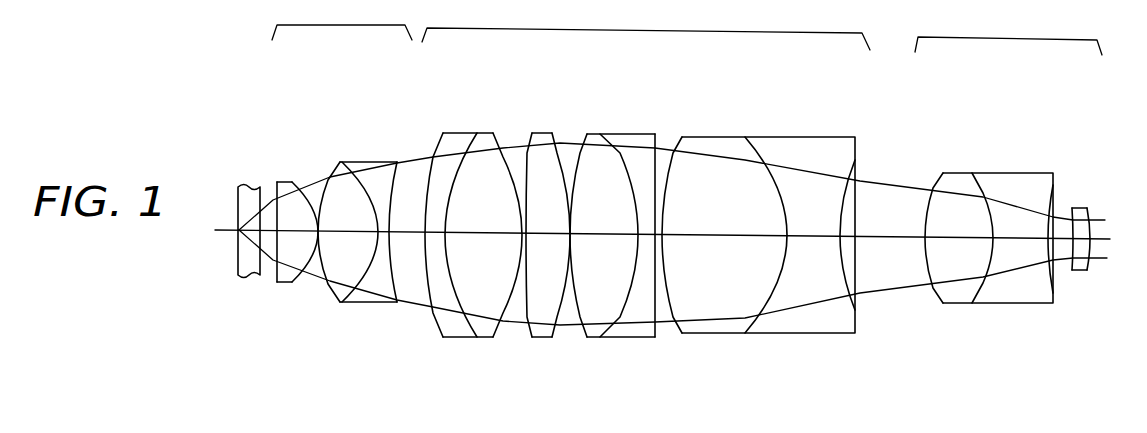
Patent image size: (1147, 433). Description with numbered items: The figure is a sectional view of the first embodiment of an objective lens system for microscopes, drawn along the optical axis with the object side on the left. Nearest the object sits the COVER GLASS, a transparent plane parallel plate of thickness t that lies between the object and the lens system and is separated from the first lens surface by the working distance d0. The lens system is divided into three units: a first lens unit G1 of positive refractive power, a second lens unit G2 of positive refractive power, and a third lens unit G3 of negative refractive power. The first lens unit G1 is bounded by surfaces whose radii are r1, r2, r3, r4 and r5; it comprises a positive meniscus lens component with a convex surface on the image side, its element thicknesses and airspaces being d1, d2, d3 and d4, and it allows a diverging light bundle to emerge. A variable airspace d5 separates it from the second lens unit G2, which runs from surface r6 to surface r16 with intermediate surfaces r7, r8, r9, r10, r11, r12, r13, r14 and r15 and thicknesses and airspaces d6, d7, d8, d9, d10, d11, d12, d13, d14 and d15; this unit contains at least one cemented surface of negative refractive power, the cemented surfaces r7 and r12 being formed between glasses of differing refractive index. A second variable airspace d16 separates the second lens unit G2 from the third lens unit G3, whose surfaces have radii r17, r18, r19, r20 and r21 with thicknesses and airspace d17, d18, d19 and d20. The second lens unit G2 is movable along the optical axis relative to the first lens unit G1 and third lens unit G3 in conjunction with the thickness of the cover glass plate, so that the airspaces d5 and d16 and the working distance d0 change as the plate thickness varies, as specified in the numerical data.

The first lens unit G1 is at (335, 196).
The second lens unit G2 is at (642, 213).
The third lens unit G3 is at (997, 211).
The cover glass plate COVER GLASS is at (240, 260).
The radius of curvature of first surface r1 is at (264, 182).
The radius of curvature of second surface r2 is at (306, 190).
The radius of curvature of third surface r3 is at (322, 220).
The radius of curvature of fourth surface r4 is at (361, 172).
The radius of curvature of fifth surface r5 is at (390, 180).
The radius of curvature of sixth surface r6 is at (429, 160).
The radius of curvature of seventh surface r7 is at (458, 163).
The radius of curvature of eighth surface r8 is at (504, 155).
The radius of curvature of ninth surface r9 is at (527, 150).
The radius of curvature of tenth surface r10 is at (557, 150).
The radius of curvature of eleventh surface r11 is at (580, 150).
The radius of curvature of twelfth surface r12 is at (621, 150).
The radius of curvature of thirteenth surface r13 is at (650, 134).
The radius of curvature of fourteenth surface r14 is at (674, 150).
The radius of curvature of fifteenth surface r15 is at (752, 137).
The radius of curvature of sixteenth surface r16 is at (835, 177).
The radius of curvature of seventeenth surface r17 is at (929, 185).
The radius of curvature of eighteenth surface r18 is at (983, 190).
The radius of curvature of nineteenth surface r19 is at (1040, 180).
The radius of curvature of twentieth surface r20 is at (1073, 210).
The radius of curvature of twenty-first surface r21 is at (1090, 212).
The working distance d0 is at (267, 231).
The thickness of first lens element d1 is at (290, 231).
The airspace between first and second lens elements d2 is at (318, 231).
The thickness of second lens element d3 is at (348, 232).
The thickness of third lens element d4 is at (373, 232).
The variable airspace between first and second lens units d5 is at (402, 232).
The thickness of fourth lens element d6 is at (445, 233).
The thickness of fifth lens element d7 is at (483, 233).
The airspace between fifth and sixth lens elements d8 is at (512, 233).
The thickness of sixth lens element d9 is at (545, 234).
The airspace between sixth and seventh lens elements d10 is at (570, 234).
The thickness of seventh lens element d11 is at (598, 234).
The thickness of eighth lens element d12 is at (643, 234).
The airspace between eighth and ninth lens elements d13 is at (663, 235).
The thickness of ninth lens element d14 is at (723, 235).
The thickness of tenth lens element d15 is at (803, 235).
The variable airspace between second and third lens units d16 is at (882, 237).
The thickness of eleventh lens element d17 is at (955, 237).
The thickness of twelfth lens element d18 is at (1015, 238).
The airspace between twelfth and thirteenth lens elements d19 is at (1062, 238).
The thickness of thirteenth lens element d20 is at (1090, 238).